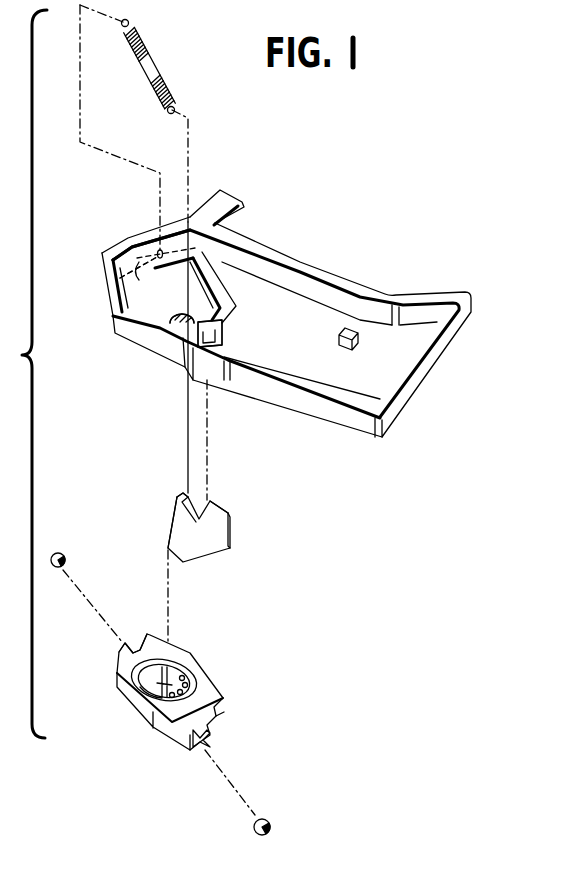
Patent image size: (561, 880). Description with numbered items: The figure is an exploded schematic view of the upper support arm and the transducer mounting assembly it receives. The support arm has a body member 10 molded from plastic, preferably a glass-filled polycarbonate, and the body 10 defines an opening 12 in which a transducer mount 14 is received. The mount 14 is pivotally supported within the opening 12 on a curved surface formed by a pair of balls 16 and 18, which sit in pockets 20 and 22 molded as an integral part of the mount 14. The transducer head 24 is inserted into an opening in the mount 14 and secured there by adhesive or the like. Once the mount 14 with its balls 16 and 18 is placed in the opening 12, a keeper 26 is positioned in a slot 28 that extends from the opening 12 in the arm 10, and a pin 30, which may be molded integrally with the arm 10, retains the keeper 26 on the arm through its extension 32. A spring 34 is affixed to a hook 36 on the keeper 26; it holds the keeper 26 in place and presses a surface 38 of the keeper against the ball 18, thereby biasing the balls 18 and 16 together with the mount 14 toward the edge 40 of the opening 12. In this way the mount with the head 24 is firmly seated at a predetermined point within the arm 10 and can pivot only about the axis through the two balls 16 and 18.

The body member 10 is at (385, 291).
The opening 12 is at (153, 300).
The transducer mount 14 is at (143, 703).
The ball 16 is at (55, 553).
The ball 18 is at (259, 815).
The pocket 20 is at (134, 647).
The pocket 22 is at (212, 737).
The transducer head 24 is at (175, 672).
The keeper 26 is at (212, 540).
The slot 28 is at (223, 344).
The pin 30 is at (173, 325).
The extension 32 is at (210, 501).
The spring 34 is at (157, 68).
The hook 36 is at (178, 499).
The surface 38 is at (168, 547).
The edge 40 is at (101, 291).